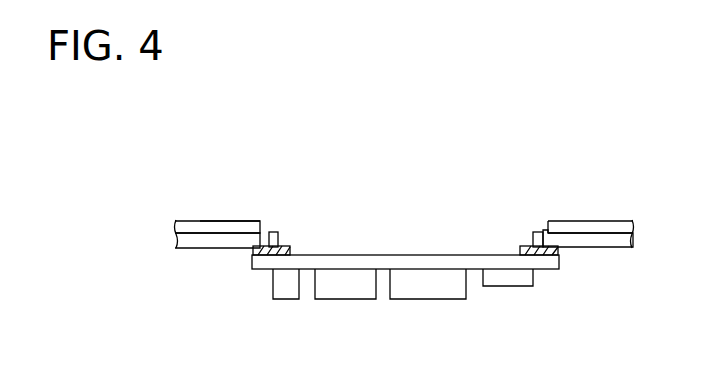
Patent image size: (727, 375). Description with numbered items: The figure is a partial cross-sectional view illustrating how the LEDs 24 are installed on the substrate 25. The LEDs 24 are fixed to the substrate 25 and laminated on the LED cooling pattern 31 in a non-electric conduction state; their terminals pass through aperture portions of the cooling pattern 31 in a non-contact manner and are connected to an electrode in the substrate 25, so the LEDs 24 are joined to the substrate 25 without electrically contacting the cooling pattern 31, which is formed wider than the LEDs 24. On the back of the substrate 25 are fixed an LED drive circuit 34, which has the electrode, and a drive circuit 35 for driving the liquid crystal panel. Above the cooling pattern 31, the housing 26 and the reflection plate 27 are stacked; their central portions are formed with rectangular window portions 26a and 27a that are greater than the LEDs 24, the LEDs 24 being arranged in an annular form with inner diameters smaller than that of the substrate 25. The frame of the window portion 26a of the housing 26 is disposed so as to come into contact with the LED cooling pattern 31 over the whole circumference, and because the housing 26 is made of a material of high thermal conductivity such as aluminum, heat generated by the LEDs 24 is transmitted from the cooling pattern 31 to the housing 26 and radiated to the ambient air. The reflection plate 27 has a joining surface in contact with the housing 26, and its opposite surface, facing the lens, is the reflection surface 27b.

The LED 24 is at (273, 232).
The substrate 25 is at (404, 262).
The housing 26 is at (203, 240).
The window portion 26a is at (539, 233).
The reflection plate 27 is at (220, 227).
The window portion 27a is at (542, 237).
The reflection surface 27b is at (243, 220).
The LED cooling pattern 31 is at (285, 245).
The LED drive circuit 34 is at (285, 288).
The drive circuit 35 is at (428, 290).